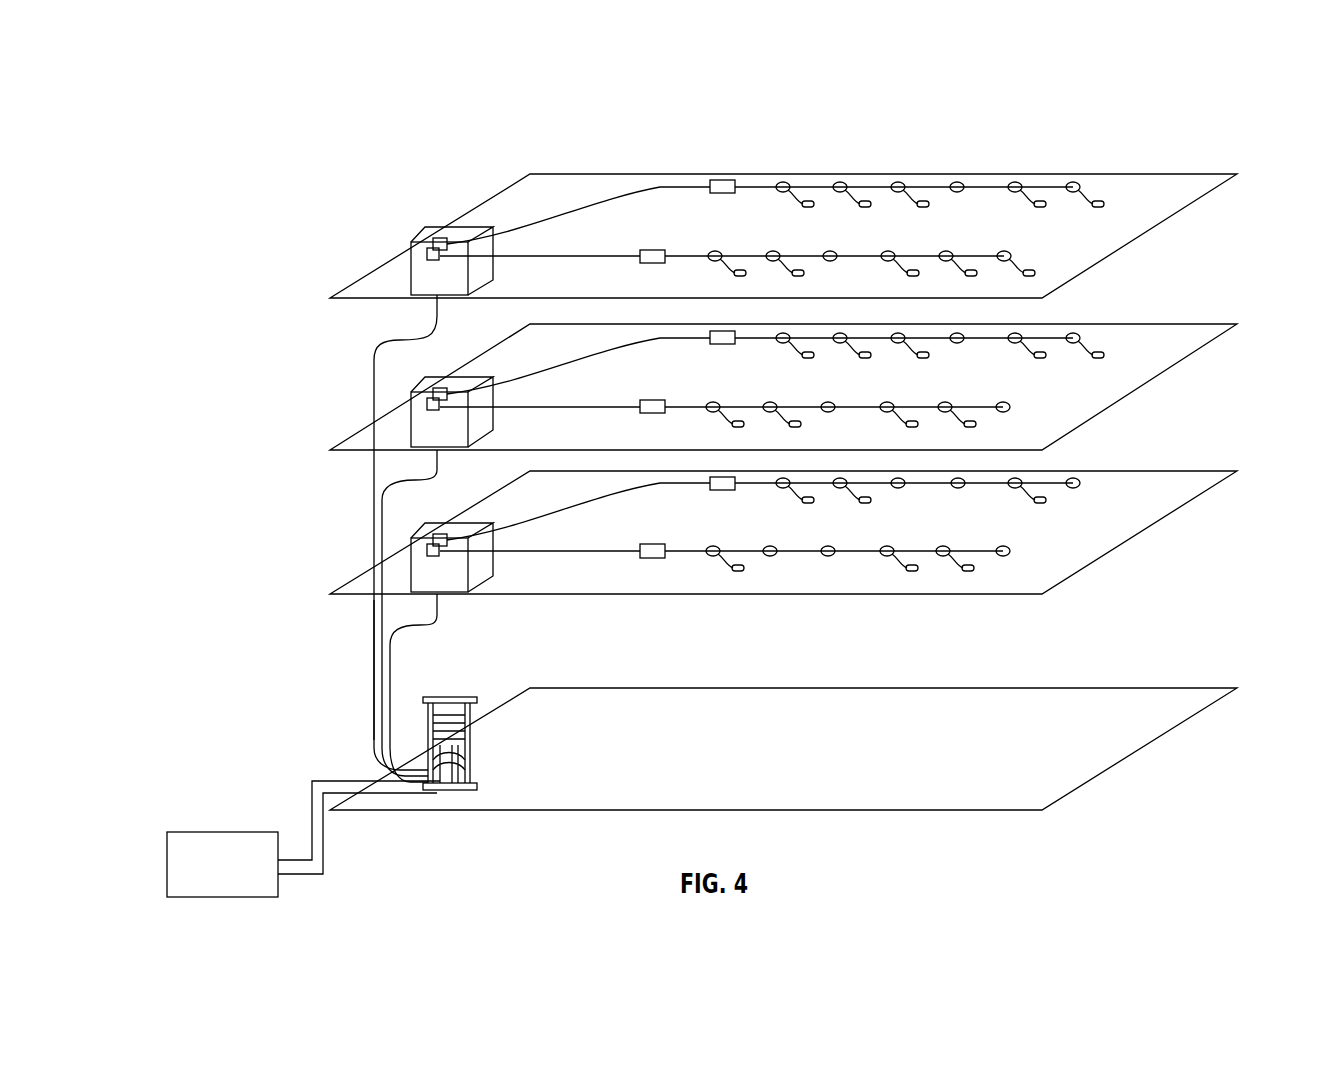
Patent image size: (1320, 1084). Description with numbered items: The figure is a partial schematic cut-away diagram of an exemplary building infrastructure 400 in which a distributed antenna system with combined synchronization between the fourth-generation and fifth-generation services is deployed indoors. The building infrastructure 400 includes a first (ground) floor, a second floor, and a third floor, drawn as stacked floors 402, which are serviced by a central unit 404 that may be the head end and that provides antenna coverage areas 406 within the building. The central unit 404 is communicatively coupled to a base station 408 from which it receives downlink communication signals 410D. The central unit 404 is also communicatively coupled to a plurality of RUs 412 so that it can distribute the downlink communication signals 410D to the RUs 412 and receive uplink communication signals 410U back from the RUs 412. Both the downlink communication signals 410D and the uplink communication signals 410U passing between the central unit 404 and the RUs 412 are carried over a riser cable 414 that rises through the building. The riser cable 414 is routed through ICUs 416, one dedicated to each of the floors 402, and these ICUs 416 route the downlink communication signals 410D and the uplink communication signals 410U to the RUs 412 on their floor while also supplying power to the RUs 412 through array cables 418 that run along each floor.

The building infrastructure 400 is at (870, 110).
The floors 402 is at (1095, 251).
The central unit 404 is at (489, 748).
The antenna coverage areas 406 is at (1222, 190).
The base station 408 is at (242, 874).
The downlink communication signals 410D is at (600, 184).
The uplink communication signals 410U is at (305, 775).
The RUs 412 is at (1040, 203).
The riser cable 414 is at (374, 688).
The ICUs 416 is at (430, 230).
The array cables 418 is at (655, 185).